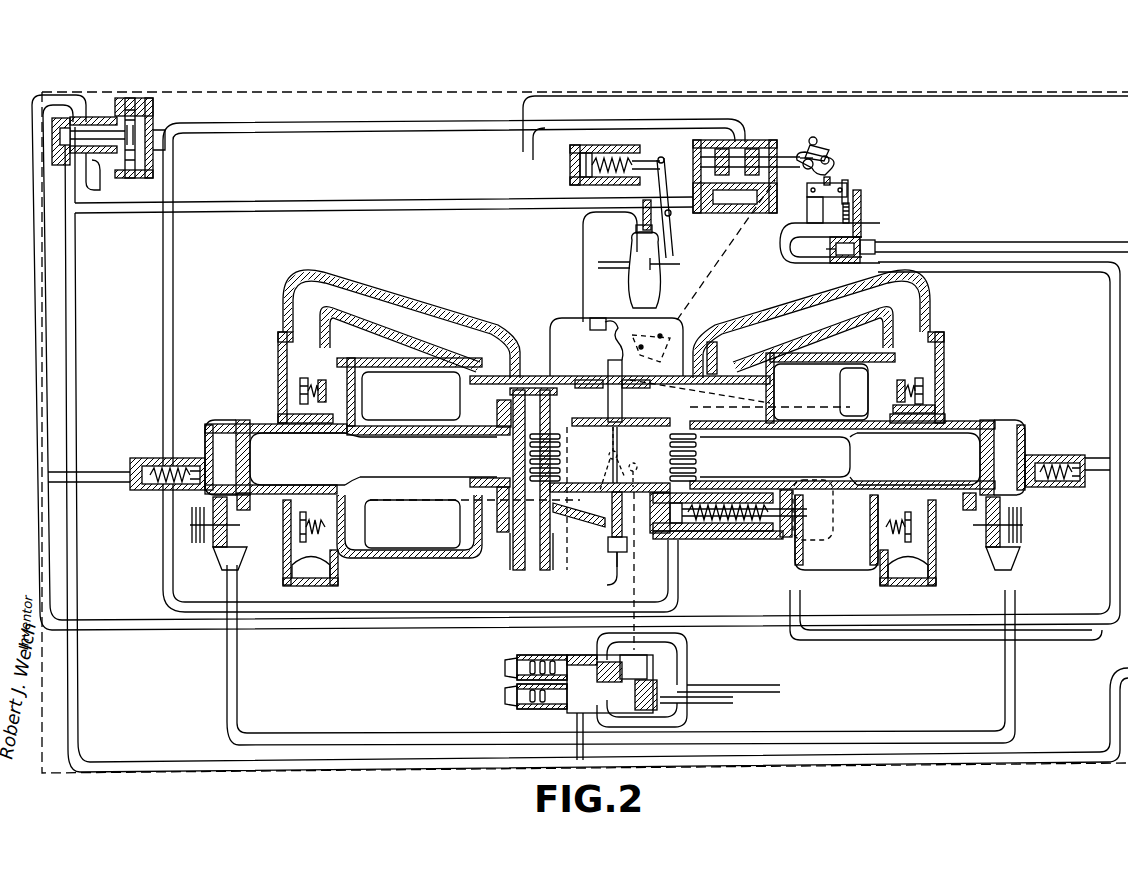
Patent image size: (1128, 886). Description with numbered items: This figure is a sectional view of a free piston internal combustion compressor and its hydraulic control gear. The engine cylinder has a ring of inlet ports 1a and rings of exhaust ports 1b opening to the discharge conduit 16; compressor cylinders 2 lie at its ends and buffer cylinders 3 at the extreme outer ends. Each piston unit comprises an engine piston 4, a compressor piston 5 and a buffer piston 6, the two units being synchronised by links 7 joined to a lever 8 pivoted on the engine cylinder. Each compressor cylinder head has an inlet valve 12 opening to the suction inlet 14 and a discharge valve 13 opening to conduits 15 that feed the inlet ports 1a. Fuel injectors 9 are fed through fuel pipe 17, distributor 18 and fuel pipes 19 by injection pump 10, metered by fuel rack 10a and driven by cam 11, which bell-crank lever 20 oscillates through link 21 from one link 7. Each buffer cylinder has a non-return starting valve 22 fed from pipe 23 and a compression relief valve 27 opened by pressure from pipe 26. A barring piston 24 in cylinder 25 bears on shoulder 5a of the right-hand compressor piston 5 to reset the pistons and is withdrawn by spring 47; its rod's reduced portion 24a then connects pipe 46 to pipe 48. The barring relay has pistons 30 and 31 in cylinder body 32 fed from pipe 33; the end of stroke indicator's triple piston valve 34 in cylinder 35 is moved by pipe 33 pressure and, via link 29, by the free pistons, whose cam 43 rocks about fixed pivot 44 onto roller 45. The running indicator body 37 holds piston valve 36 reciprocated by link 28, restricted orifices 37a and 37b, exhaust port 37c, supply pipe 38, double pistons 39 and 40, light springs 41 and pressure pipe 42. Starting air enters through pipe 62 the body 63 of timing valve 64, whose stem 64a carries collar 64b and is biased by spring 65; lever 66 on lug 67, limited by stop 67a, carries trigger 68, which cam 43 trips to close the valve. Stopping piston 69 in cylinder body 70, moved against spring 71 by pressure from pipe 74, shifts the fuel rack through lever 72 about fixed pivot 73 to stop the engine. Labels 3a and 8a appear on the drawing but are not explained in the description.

The inlet ports 1a is at (668, 475).
The exhaust ports 1b is at (563, 460).
The compressor cylinders 2 is at (380, 357).
The buffer cylinders 3 is at (272, 425).
The cylinder extension 3a is at (953, 415).
The engine pistons 4 is at (468, 445).
The compressor piston 5 is at (357, 388).
The shoulder 5a is at (847, 560).
The buffer piston 6 is at (250, 466).
The links 7 is at (398, 502).
The lever 8 is at (606, 430).
The valve port 8a is at (636, 463).
The fuel injectors 9 is at (612, 532).
The fuel injection pump 10 is at (640, 288).
The fuel rack 10a is at (603, 262).
The cam 11 is at (664, 330).
The inlet valve 12 is at (610, 542).
The discharge valve 13 is at (295, 382).
The suction inlet 14 is at (338, 575).
The conduits 15 is at (348, 278).
The discharge conduit 16 is at (513, 550).
The fuel pipe 17 is at (583, 277).
The distributor 18 is at (590, 316).
The fuel pipes 19 is at (616, 326).
The bell-crank lever 20 is at (627, 346).
The link 21 is at (711, 383).
The non-return valve 22 is at (203, 543).
The pipe 23 is at (993, 268).
The barring piston 24 is at (732, 530).
The reduced portion 24a is at (785, 490).
The cylinder 25 is at (705, 530).
The resetting control pipe 26 is at (42, 218).
The compression relief valve 27 is at (192, 453).
The link 28 is at (636, 585).
The link 29 is at (726, 250).
The piston 30 is at (88, 155).
The piston 31 is at (133, 158).
The cylinder body 32 is at (152, 115).
The pipe 33 is at (66, 260).
The triple piston valve 34 is at (752, 143).
The cylinder 35 is at (697, 153).
The piston valve 36 is at (683, 700).
The running indicator 37 is at (540, 657).
The orifice 37a is at (660, 668).
The orifice 37b is at (625, 730).
The exhaust port 37c is at (585, 648).
The fluid pressure supply pipe 38 is at (668, 688).
The double piston 39 is at (640, 657).
The double piston 40 is at (565, 708).
The springs 41 is at (505, 698).
The fluid pressure pipe 42 is at (725, 686).
The cam 43 is at (823, 145).
The fixed pivot 44 is at (835, 157).
The roller 45 is at (805, 152).
The pipe 46 is at (167, 262).
The spring 47 is at (750, 540).
The pipe 48 is at (880, 642).
The pipe 62 is at (1010, 252).
The body 63 is at (830, 250).
The timing valve 64 is at (830, 263).
The valve stem 64a is at (861, 208).
The collar 64b is at (878, 237).
The spring 65 is at (850, 224).
The lever 66 is at (807, 191).
The lug 67 is at (807, 207).
The stop 67a is at (830, 183).
The trigger 68 is at (850, 185).
The stopping piston 69 is at (578, 158).
The cylinder body 70 is at (570, 180).
The spring 71 is at (610, 150).
The lever 72 is at (663, 168).
The fixed pivot 73 is at (673, 218).
The pipe 74 is at (522, 130).